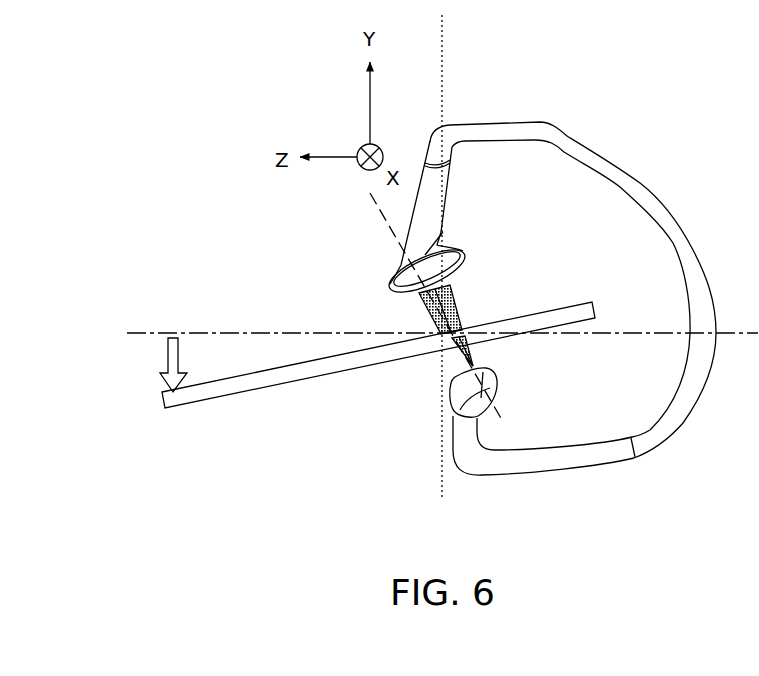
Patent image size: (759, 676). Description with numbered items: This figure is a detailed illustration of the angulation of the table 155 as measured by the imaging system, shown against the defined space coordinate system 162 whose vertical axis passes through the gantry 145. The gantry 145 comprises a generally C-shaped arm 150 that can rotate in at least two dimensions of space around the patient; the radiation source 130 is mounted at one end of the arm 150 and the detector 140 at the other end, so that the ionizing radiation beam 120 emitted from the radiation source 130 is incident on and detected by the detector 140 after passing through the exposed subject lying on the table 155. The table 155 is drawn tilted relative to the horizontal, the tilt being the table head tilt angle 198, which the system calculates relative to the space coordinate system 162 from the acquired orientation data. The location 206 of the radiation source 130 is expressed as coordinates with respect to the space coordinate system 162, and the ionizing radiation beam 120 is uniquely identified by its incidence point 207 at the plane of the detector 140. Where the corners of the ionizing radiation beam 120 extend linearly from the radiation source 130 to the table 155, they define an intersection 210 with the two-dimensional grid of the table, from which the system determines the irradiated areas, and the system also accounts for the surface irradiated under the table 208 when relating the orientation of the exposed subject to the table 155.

The ionizing radiation beam 120 is at (461, 300).
The radiation source 130 is at (507, 368).
The detector 140 is at (465, 243).
The gantry 145 is at (563, 252).
The arm 150 is at (648, 184).
The table 155 is at (215, 401).
The space coordinate system 162 is at (445, 32).
The table head tilt angle 198 is at (164, 360).
The location of the radiation source 206 is at (475, 369).
The incidence point 207 is at (461, 290).
The surface irradiated under the table 208 is at (479, 350).
The intersection 210 is at (469, 322).